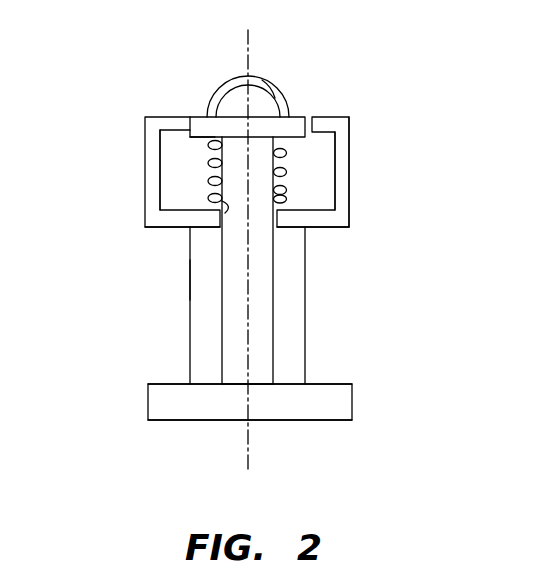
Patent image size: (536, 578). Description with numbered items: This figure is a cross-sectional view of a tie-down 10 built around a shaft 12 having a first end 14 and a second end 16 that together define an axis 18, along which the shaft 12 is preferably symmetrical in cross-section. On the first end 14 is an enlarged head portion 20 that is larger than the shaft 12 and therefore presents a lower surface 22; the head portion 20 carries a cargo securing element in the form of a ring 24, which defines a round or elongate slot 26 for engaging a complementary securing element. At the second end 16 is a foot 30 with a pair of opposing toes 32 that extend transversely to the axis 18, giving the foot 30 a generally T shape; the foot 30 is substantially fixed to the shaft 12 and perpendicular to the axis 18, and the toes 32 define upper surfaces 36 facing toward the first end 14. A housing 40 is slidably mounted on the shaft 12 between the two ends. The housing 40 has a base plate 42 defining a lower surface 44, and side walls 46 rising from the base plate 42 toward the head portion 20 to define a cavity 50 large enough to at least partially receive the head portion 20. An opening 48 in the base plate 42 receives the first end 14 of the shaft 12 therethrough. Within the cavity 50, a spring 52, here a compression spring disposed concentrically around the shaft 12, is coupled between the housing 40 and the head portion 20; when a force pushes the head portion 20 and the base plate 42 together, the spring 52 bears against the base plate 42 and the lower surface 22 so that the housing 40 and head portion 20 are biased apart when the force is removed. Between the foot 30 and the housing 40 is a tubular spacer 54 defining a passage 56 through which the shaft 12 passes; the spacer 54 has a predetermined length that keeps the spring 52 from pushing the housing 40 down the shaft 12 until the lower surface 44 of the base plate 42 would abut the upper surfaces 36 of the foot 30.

The tie-down 10 is at (368, 95).
The shaft 12 is at (284, 290).
The first end 14 is at (242, 176).
The second end 16 is at (276, 376).
The axis 18 is at (249, 31).
The head portion 20 is at (283, 98).
The lower surface 22 is at (198, 140).
The ring 24 is at (260, 92).
The slot 26 is at (272, 88).
The foot 30 is at (140, 394).
The toes 32 is at (173, 421).
The upper surfaces 36 is at (172, 384).
The housing 40 is at (240, 176).
The base plate 42 is at (178, 221).
The lower surface 44 is at (335, 227).
The side walls 46 is at (340, 196).
The opening 48 is at (215, 192).
The cavity 50 is at (181, 152).
The spring 52 is at (283, 172).
The spacer 54 is at (308, 312).
The passage 56 is at (225, 298).